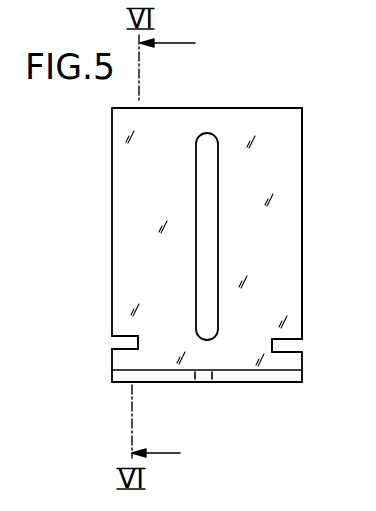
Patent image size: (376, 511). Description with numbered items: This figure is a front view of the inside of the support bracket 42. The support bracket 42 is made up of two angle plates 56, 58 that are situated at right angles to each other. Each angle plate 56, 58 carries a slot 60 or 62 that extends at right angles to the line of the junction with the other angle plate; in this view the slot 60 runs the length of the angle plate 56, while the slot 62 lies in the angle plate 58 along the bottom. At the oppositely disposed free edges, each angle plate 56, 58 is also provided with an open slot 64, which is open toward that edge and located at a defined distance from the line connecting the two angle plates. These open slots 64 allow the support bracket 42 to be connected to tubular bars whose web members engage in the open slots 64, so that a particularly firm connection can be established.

The support bracket 42 is at (105, 196).
The angle plate 56 is at (296, 178).
The angle plate 58 is at (265, 383).
The slot 60 is at (206, 139).
The slot 62 is at (203, 382).
The open slot 64 is at (113, 342).